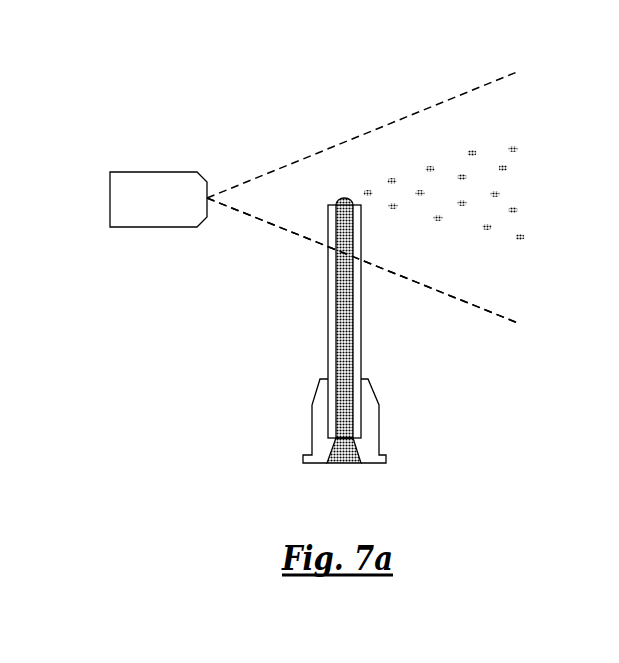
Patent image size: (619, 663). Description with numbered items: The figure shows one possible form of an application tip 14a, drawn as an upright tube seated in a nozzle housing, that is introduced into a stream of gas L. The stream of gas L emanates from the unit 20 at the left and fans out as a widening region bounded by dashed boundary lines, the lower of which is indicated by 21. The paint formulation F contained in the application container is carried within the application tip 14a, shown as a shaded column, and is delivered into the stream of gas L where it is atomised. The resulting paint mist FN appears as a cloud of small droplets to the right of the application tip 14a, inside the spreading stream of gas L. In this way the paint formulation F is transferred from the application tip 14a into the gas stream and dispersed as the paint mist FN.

The light source 20 is at (155, 193).
The stream of gas L is at (285, 202).
The light cone boundary 21 is at (400, 277).
The paint mist FN is at (455, 165).
The nozzle tube 14a is at (328, 335).
The paint formulation F is at (355, 358).